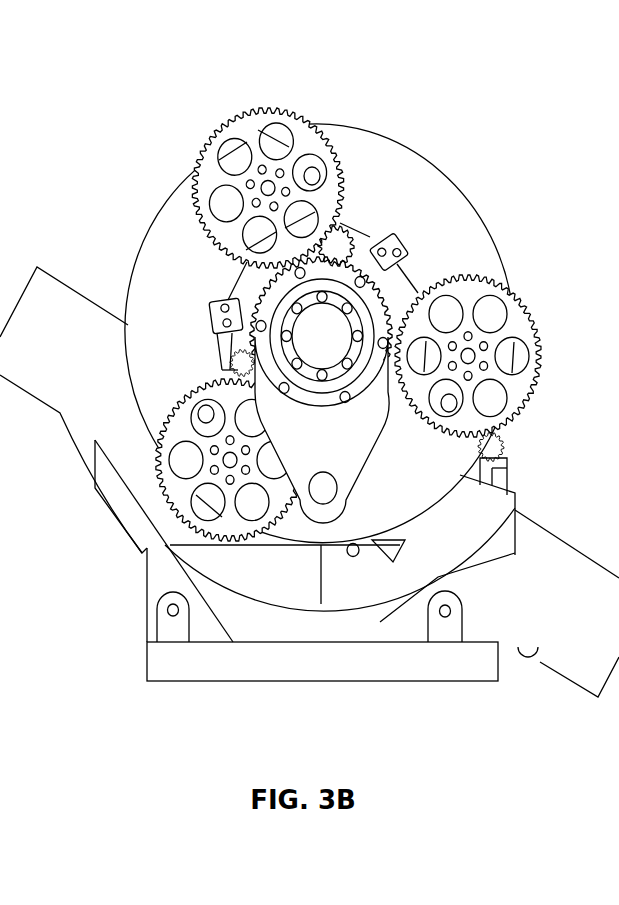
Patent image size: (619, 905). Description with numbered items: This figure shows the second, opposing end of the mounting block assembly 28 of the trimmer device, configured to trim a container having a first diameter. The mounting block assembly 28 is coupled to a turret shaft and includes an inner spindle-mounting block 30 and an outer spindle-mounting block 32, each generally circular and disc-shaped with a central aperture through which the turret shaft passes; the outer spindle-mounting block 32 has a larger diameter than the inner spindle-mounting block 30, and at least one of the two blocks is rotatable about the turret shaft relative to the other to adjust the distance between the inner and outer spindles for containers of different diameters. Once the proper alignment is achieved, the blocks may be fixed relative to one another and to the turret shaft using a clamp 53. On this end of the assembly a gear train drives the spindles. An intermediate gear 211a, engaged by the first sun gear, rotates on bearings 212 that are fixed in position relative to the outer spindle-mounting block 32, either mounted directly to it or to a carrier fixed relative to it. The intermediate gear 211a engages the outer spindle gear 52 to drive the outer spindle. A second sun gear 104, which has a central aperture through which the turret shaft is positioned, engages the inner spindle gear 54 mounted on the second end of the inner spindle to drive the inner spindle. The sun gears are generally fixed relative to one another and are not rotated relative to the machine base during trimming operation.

The mounting block assembly 28 is at (146, 211).
The inner spindle-mounting block 30 is at (428, 262).
The outer spindle-mounting block 32 is at (160, 278).
The outer spindle gear 52 is at (352, 170).
The clamp 53 is at (412, 285).
The inner spindle gear 54 is at (368, 234).
The second sun gear 104 is at (420, 273).
The intermediate gear 211a is at (207, 165).
The bearings 212 is at (268, 182).